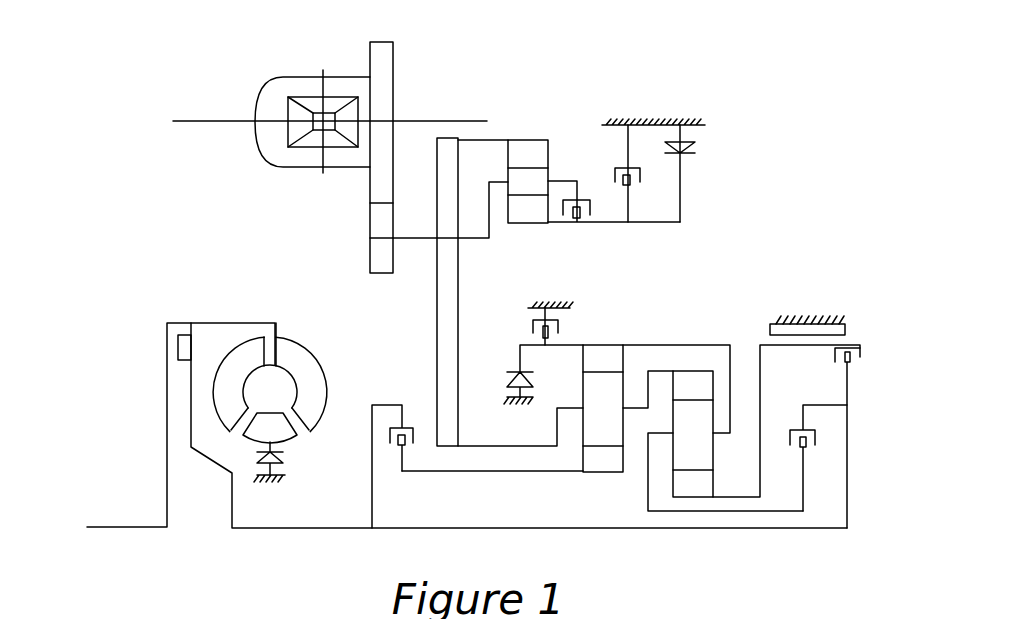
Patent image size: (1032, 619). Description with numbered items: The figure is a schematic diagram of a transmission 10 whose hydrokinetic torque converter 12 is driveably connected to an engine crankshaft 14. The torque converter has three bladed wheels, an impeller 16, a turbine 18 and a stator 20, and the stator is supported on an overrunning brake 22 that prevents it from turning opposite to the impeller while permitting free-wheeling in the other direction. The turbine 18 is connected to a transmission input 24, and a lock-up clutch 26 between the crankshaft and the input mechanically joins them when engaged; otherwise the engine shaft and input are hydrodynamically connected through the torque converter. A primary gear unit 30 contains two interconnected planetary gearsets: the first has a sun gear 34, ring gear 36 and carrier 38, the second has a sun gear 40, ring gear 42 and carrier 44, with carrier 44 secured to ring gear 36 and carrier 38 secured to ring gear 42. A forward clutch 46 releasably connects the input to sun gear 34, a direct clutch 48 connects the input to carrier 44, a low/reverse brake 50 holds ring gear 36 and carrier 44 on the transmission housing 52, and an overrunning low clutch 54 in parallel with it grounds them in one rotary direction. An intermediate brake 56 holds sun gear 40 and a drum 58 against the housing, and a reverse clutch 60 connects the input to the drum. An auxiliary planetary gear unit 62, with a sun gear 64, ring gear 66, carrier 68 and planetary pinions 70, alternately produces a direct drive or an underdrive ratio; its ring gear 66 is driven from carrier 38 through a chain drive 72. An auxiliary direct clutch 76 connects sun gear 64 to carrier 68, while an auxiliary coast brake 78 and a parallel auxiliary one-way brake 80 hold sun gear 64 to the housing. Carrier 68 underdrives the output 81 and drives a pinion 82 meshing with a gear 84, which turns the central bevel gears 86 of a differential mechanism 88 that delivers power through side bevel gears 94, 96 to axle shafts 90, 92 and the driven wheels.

The transmission 10 is at (806, 196).
The hydrokinetic torque converter 12 is at (284, 369).
The engine crankshaft 14 is at (128, 527).
The impeller 16 is at (312, 383).
The turbine 18 is at (233, 372).
The stator 20 is at (275, 425).
The overrunning brake 22 is at (288, 460).
The transmission input 24 is at (327, 528).
The lock-up clutch 26 is at (178, 350).
The primary gear unit 30 is at (562, 490).
The sun gear 34 is at (603, 473).
The ring gear 36 is at (603, 346).
The carrier 38 is at (572, 408).
The sun gear 40 is at (583, 427).
The ring gear 42 is at (696, 372).
The carrier 44 is at (713, 433).
The forward clutch 46 is at (678, 417).
The direct clutch 48 is at (803, 448).
The low/reverse brake 50 is at (543, 338).
The transmission housing 52 is at (268, 482).
The overrunning low clutch 54 is at (512, 388).
The intermediate brake 56 is at (808, 330).
The drum 58 is at (781, 346).
The reverse clutch 60 is at (850, 364).
The auxiliary planetary gear unit 62 is at (545, 171).
The sun gear 64 is at (527, 224).
The ring gear 66 is at (530, 141).
The carrier 68 is at (500, 184).
The planetary pinions 70 is at (548, 178).
The chain drive 72 is at (453, 323).
The auxiliary direct clutch 76 is at (578, 214).
The auxiliary coast brake 78 is at (623, 184).
The auxiliary one-way brake 80 is at (688, 151).
The output 81 is at (417, 238).
The pinion 82 is at (377, 220).
The gear 84 is at (378, 146).
The central bevel gears 86 is at (313, 100).
The differential mechanism 88 is at (323, 46).
The axle shaft 90 is at (440, 121).
The axle shaft 92 is at (208, 122).
The side bevel gear 94 is at (335, 112).
The side bevel gear 96 is at (302, 115).